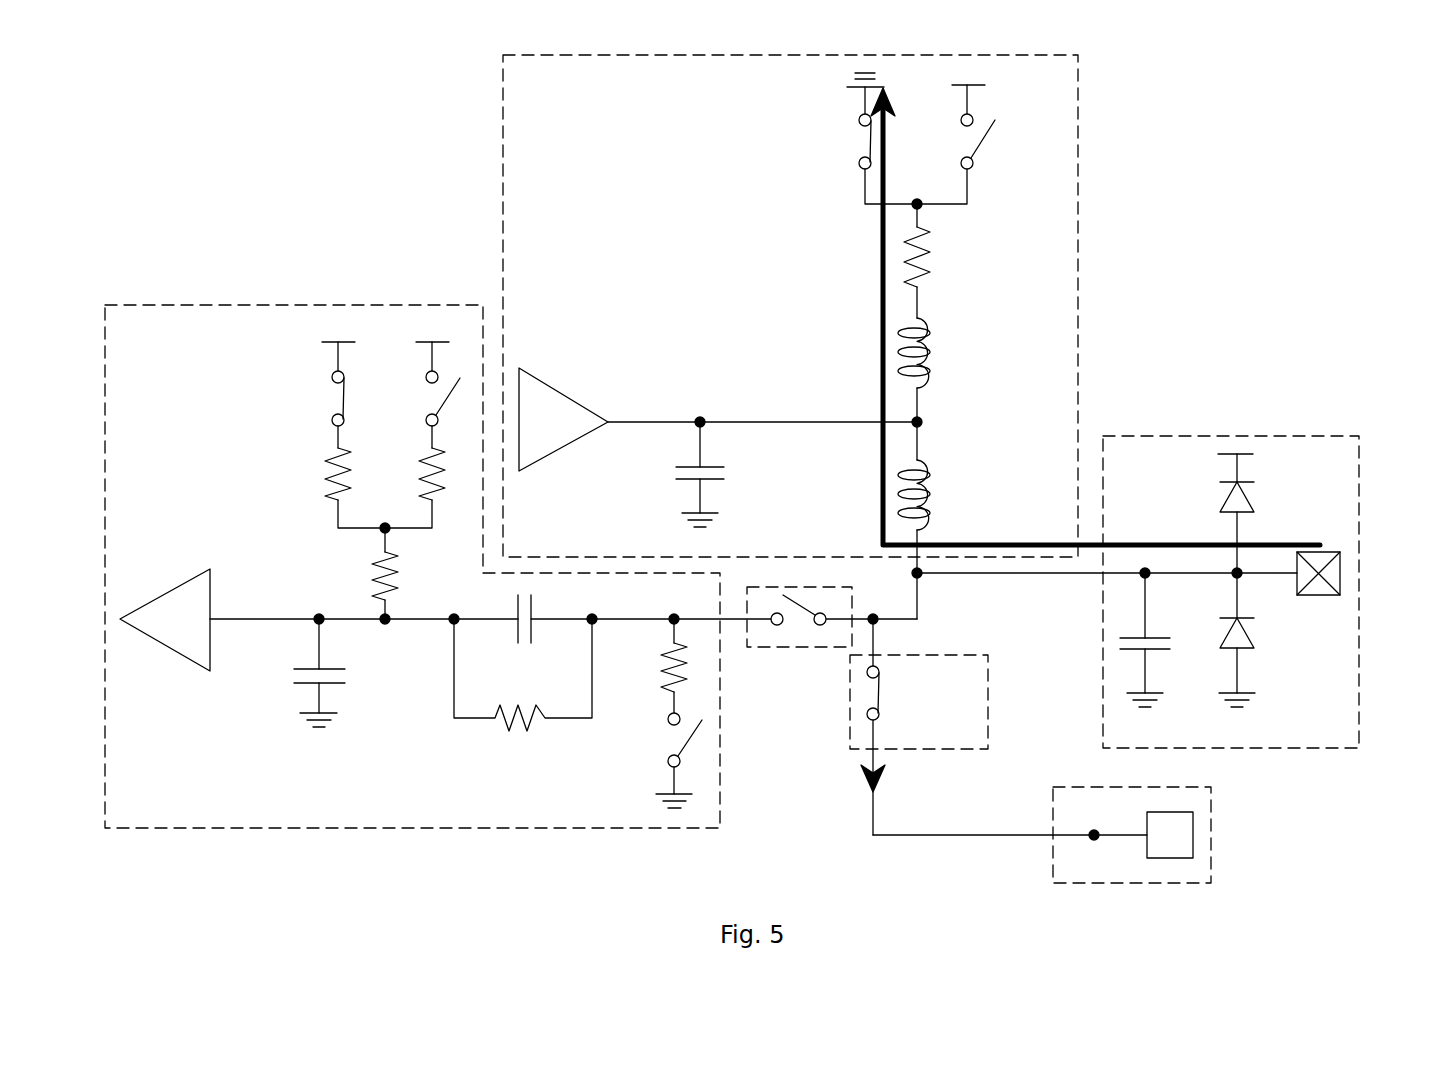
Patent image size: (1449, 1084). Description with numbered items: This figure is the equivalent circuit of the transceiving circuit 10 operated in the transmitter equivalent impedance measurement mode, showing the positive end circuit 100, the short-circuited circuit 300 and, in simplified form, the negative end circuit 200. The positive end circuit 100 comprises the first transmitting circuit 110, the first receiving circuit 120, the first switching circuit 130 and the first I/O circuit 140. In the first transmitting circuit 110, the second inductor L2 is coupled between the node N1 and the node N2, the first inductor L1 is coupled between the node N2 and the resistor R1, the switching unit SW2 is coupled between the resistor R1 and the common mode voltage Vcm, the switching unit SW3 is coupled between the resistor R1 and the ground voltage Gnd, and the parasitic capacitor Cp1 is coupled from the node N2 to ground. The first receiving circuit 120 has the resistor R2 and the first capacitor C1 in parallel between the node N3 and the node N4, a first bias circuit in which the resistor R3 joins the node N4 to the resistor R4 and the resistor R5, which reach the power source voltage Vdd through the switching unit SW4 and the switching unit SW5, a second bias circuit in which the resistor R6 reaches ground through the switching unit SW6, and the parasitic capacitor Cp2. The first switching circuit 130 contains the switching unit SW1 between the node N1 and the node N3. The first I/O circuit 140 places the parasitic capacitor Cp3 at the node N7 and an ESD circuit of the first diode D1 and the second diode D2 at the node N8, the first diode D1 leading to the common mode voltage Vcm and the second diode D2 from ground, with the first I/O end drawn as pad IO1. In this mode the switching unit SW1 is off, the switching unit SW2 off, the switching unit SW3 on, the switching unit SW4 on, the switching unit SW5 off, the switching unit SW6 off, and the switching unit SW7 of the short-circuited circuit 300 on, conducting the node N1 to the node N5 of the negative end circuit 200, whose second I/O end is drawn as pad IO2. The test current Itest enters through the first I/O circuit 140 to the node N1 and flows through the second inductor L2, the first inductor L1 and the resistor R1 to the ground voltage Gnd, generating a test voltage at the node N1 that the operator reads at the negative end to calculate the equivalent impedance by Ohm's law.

The transceiving circuit 10 is at (130, 76).
The positive end circuit 100 is at (1121, 105).
The first transmitting circuit 110 is at (500, 167).
The first receiving circuit 120 is at (262, 302).
The first switching circuit 130 is at (800, 648).
The first input/output (I/O) circuit 140 is at (1232, 432).
The negative end circuit 200 is at (1211, 823).
The short-circuited circuit 300 is at (932, 750).
The switching unit SW1 is at (803, 604).
The switching unit SW2 is at (986, 152).
The switching unit SW3 is at (862, 141).
The switching unit SW4 is at (336, 398).
The switching unit SW5 is at (443, 398).
The switching unit SW6 is at (676, 746).
The switching unit SW7 is at (880, 696).
The resistor R1 is at (938, 257).
The resistor R2 is at (523, 693).
The resistor R3 is at (365, 571).
The resistor R4 is at (336, 477).
The resistor R5 is at (412, 477).
The resistor R6 is at (653, 666).
The first inductor L1 is at (934, 353).
The second inductor L2 is at (934, 495).
The first capacitor C1 is at (523, 637).
The parasitic capacitor Cp1 is at (674, 472).
The parasitic capacitor Cp2 is at (292, 670).
The parasitic capacitor Cp3 is at (1161, 640).
The first diode D1 is at (1214, 527).
The second diode D2 is at (1257, 640).
The node N1 is at (896, 579).
The node N2 is at (938, 422).
The node N3 is at (671, 602).
The node N4 is at (384, 634).
The node N5 is at (1094, 821).
The node N7 is at (1127, 586).
The node N8 is at (1220, 586).
The first input/output pad IO1 is at (1340, 573).
The second input/output pad IO2 is at (1193, 846).
The test current Itest is at (878, 292).
The power source voltage Vdd is at (380, 342).
The common mode voltage Vcm is at (997, 92).
The ground voltage Gnd is at (835, 90).